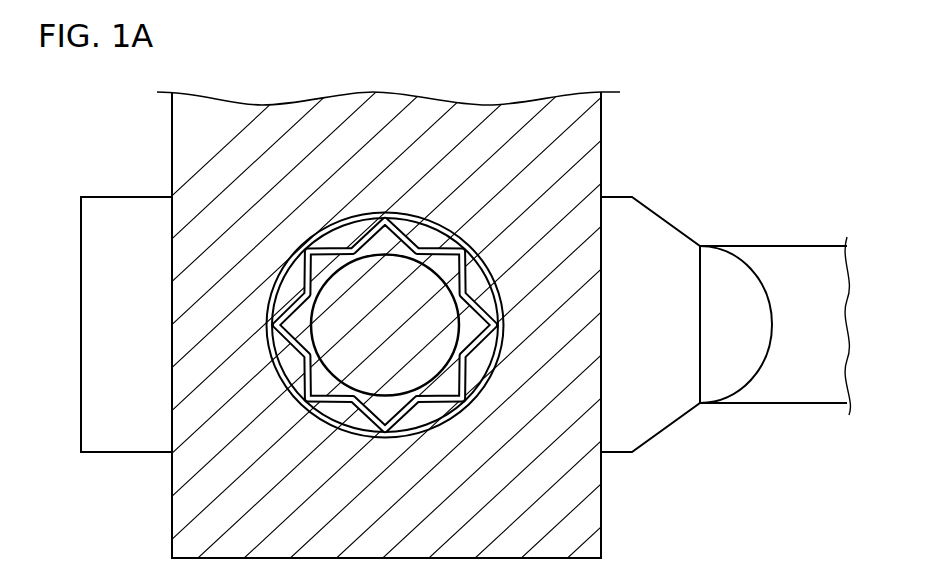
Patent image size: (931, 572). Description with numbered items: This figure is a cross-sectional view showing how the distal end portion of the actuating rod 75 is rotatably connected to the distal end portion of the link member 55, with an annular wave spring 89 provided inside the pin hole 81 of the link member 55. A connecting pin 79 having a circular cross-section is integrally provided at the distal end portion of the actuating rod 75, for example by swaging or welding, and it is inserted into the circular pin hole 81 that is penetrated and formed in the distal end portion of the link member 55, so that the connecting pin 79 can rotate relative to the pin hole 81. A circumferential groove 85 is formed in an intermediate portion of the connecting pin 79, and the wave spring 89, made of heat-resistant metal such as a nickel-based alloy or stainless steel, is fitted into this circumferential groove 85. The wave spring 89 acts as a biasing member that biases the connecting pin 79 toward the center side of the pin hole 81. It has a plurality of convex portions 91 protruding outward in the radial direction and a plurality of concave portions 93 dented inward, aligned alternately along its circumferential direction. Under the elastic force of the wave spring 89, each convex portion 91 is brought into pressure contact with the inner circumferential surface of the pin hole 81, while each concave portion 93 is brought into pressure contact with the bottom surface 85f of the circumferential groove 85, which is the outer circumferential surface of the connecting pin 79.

The link member 55 is at (177, 139).
The actuating rod 75 is at (787, 250).
The connecting pin 79 is at (413, 227).
The pin hole 81 is at (348, 412).
The circumferential groove 85 is at (373, 223).
The bottom surface of the circumferential groove 85f is at (453, 400).
The wave spring 89 is at (293, 274).
The convex portions 91 is at (476, 250).
The concave portions 93 is at (468, 292).